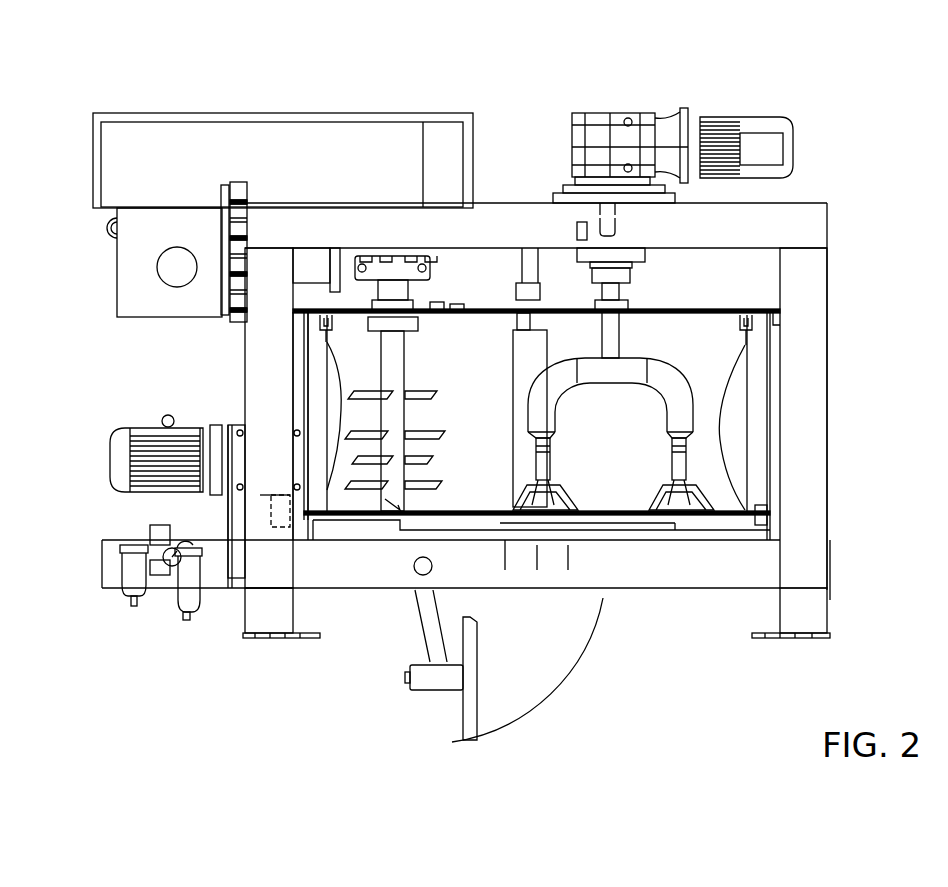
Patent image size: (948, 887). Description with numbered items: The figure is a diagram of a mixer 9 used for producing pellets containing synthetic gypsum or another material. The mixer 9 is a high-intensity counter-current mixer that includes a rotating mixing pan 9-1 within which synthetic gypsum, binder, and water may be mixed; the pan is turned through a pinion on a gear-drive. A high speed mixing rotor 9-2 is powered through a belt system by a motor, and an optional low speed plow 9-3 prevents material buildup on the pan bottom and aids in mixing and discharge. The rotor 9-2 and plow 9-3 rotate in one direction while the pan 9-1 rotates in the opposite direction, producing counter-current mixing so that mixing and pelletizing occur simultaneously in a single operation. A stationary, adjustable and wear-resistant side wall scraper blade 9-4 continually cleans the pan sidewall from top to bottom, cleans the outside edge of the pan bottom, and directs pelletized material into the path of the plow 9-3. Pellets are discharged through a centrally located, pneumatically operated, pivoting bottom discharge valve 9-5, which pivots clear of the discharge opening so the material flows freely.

The mixer 9 is at (98, 58).
The rotating mixing pan 9-1 is at (318, 418).
The high speed mixing rotor 9-2 is at (368, 493).
The low speed plow 9-3 is at (613, 384).
The mixing pan side wall scraper blade 9-4 is at (512, 415).
The pivoting bottom discharge valve 9-5 is at (463, 704).